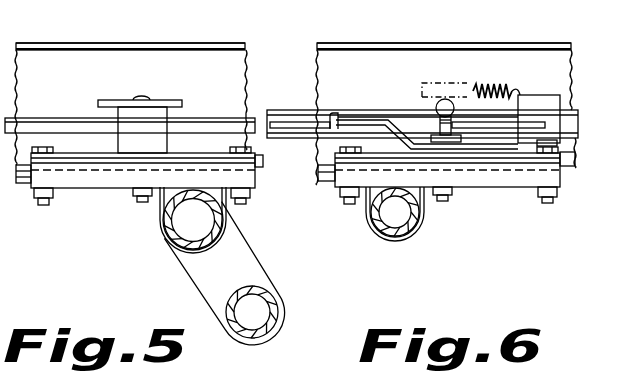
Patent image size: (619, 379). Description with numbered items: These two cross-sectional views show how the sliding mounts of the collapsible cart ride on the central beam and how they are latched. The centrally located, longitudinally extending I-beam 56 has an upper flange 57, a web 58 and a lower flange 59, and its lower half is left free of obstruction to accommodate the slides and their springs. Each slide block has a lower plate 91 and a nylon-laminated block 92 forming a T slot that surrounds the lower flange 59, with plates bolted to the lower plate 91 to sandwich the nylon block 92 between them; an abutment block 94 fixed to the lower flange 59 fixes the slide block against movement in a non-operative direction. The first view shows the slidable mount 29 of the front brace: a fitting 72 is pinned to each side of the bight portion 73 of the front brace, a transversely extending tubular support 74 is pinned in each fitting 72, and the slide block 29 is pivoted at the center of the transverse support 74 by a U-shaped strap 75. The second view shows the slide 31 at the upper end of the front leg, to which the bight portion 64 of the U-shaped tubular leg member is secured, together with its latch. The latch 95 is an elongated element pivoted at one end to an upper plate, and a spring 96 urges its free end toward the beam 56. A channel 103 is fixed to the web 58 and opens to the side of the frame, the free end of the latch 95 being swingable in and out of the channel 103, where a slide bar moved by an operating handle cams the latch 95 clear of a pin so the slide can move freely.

In FIG. 5, the slidable mount 29 is at (221, 101).
In FIG. 6, the slide 31 is at (506, 223).
In FIG. 5, the I-beam 56 is at (137, 42).
In FIG. 6, the I-beam 56 is at (429, 42).
In FIG. 5, the upper flange 57 is at (200, 44).
In FIG. 6, the upper flange 57 is at (472, 44).
In FIG. 5, the web 58 is at (131, 107).
In FIG. 6, the web 58 is at (446, 117).
In FIG. 5, the lower flange 59 is at (20, 162).
In FIG. 6, the lower flange 59 is at (503, 168).
In FIG. 6, the bight portion 64 is at (395, 241).
In FIG. 5, the fitting 72 is at (248, 265).
In FIG. 5, the bight portion 73 is at (272, 308).
In FIG. 5, the tubular support 74 is at (181, 246).
In FIG. 5, the U-shaped strap 75 is at (230, 226).
In FIG. 5, the lower plate 91 is at (89, 182).
In FIG. 6, the lower plate 91 is at (560, 187).
In FIG. 5, the nylon-laminated block 92 is at (80, 165).
In FIG. 5, the abutment block 94 is at (22, 184).
In FIG. 6, the abutment block 94 is at (327, 174).
In FIG. 6, the latch 95 is at (362, 121).
In FIG. 6, the spring 96 is at (342, 113).
In FIG. 6, the channel 103 is at (283, 111).